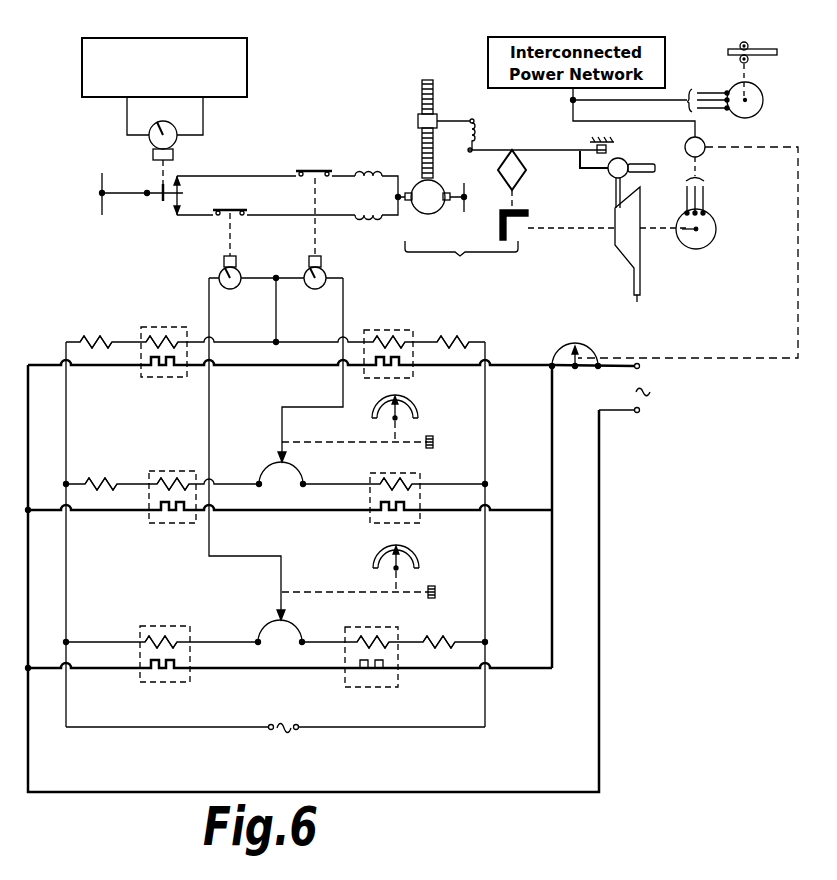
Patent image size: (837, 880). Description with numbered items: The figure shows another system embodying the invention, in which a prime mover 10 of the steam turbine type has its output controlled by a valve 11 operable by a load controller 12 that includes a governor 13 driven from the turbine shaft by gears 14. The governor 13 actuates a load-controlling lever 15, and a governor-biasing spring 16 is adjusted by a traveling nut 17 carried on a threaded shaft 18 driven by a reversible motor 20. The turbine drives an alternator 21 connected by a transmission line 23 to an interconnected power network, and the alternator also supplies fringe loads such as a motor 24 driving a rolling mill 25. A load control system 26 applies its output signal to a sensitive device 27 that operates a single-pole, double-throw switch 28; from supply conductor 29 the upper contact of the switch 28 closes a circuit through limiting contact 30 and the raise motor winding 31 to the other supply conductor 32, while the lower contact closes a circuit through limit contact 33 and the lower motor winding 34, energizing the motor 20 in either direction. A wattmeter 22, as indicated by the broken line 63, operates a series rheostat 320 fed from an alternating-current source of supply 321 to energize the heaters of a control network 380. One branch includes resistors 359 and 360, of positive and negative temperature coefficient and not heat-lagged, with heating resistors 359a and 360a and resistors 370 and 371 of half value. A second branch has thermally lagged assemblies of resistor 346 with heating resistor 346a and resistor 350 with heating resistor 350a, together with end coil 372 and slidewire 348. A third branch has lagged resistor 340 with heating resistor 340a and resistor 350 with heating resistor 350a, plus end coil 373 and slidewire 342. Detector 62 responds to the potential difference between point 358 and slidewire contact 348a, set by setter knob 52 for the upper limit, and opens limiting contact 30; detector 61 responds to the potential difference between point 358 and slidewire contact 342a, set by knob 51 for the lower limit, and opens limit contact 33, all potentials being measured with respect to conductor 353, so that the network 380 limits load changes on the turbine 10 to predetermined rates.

The prime mover 10 is at (641, 214).
The valve 11 is at (628, 162).
The load controller 12 is at (474, 279).
The governor 13 is at (527, 173).
The gears 14 is at (518, 226).
The load-controlling lever 15 is at (485, 150).
The governor-biasing spring 16 is at (466, 146).
The traveling nut 17 is at (418, 118).
The threaded shaft 18 is at (436, 100).
The reversible motor 20 is at (427, 214).
The alternator 21 is at (717, 226).
The wattmeter 22 is at (706, 152).
The transmission line 23 is at (571, 100).
The motor 24 is at (762, 92).
The rolling mill 25 is at (781, 31).
The load control system 26 is at (82, 74).
The sensitive device 27 is at (171, 127).
The single-pole, double-throw switch 28 is at (162, 199).
The supply conductor 29 is at (101, 193).
The limiting contact 30 is at (313, 170).
The raise motor winding 31 is at (370, 172).
The supply conductor 32 is at (466, 208).
The limit contact 33 is at (236, 208).
The lower motor winding 34 is at (372, 221).
The knob 51 is at (437, 589).
The setter knob 52 is at (434, 443).
The detector 61 is at (222, 270).
The detector 62 is at (326, 270).
The broken line 63 is at (798, 274).
The rheostat 320 is at (586, 344).
The alternating-current source of supply 321 is at (652, 393).
The resistor 340 is at (160, 638).
The heating resistor 340a is at (160, 672).
The slidewire 342 is at (299, 632).
The slidewire contact 342a is at (279, 617).
The resistor 346 is at (163, 480).
The heating resistor 346a is at (182, 514).
The slidewire 348 is at (303, 478).
The slidewire contact 348a is at (280, 459).
The resistor 350 is at (405, 483).
The heating resistor 350a is at (387, 514).
The conductor 353 is at (68, 405).
The point 358 is at (278, 339).
The resistor 359 is at (160, 335).
The heating resistor 359a is at (170, 368).
The resistor 360 is at (388, 337).
The heating resistor 360a is at (398, 368).
The resistor 370 is at (98, 338).
The resistor 371 is at (453, 337).
The end coil 372 is at (107, 481).
The end coil 373 is at (440, 638).
The control network 380 is at (137, 603).